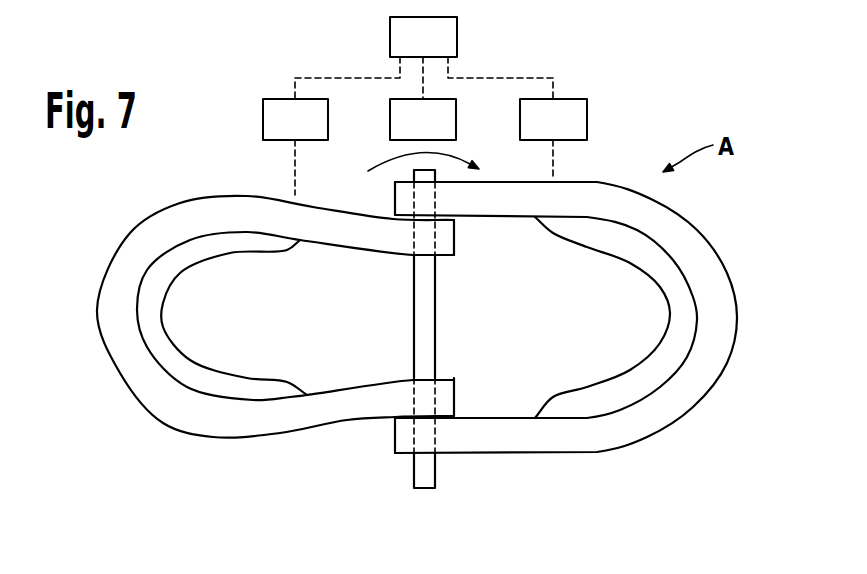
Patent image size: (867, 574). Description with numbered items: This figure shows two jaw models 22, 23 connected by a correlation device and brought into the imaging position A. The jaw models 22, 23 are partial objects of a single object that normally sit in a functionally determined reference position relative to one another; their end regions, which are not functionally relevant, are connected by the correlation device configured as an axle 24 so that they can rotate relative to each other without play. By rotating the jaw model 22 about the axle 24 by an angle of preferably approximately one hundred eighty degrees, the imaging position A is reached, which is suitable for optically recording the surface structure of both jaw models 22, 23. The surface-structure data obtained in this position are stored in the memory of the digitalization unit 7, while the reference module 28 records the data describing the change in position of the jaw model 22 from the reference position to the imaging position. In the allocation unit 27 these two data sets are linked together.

The digitalization unit 7 is at (263, 120).
The jaw model 22 is at (682, 230).
The jaw model 23 is at (124, 377).
The axle 24 is at (422, 473).
The allocation unit 27 is at (457, 38).
The reference module 28 is at (456, 129).